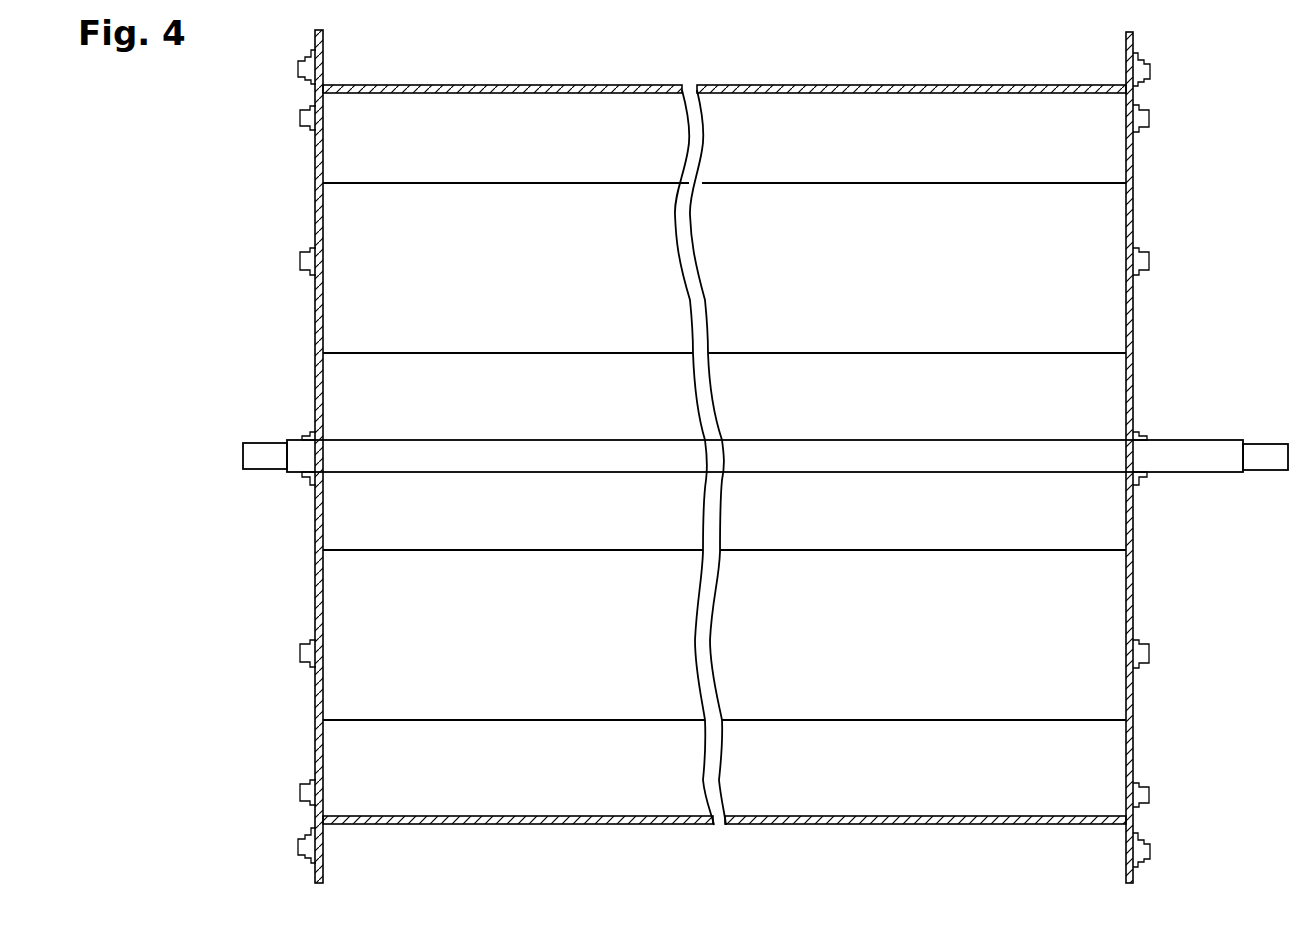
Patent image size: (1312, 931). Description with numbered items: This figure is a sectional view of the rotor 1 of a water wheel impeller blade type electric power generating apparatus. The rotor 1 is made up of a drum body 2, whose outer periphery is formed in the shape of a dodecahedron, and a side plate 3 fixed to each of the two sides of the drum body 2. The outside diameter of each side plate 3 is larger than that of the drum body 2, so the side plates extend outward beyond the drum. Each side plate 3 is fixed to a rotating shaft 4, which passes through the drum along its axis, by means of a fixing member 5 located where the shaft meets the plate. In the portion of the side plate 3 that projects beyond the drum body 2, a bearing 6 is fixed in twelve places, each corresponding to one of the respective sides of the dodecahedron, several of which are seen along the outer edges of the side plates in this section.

The rotor 1 is at (1182, 145).
The drum body 2 is at (1105, 163).
The side plate 3 is at (316, 199).
The rotating shaft 4 is at (1222, 455).
The fixing member 5 is at (304, 433).
The bearing 6 is at (306, 60).